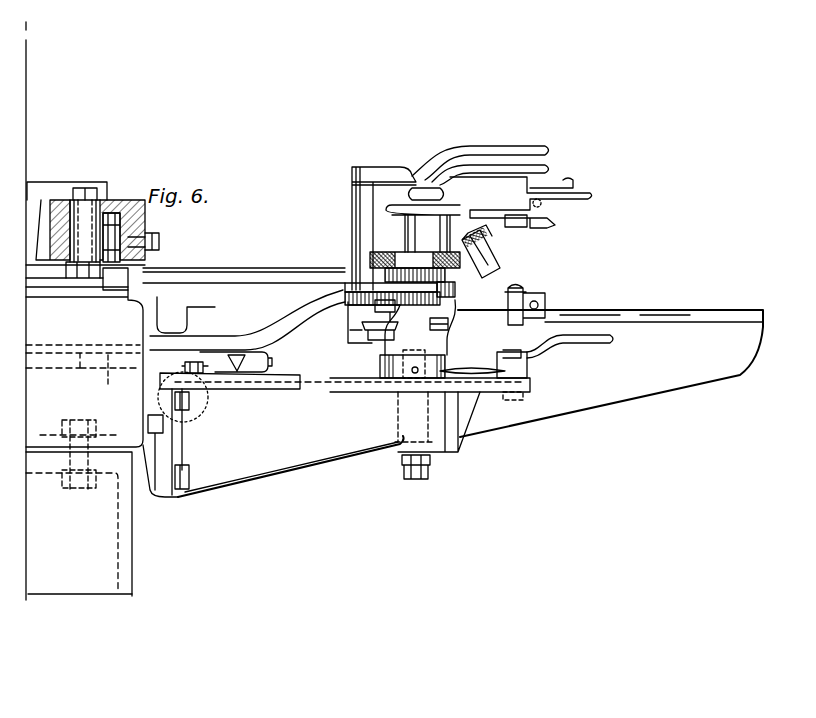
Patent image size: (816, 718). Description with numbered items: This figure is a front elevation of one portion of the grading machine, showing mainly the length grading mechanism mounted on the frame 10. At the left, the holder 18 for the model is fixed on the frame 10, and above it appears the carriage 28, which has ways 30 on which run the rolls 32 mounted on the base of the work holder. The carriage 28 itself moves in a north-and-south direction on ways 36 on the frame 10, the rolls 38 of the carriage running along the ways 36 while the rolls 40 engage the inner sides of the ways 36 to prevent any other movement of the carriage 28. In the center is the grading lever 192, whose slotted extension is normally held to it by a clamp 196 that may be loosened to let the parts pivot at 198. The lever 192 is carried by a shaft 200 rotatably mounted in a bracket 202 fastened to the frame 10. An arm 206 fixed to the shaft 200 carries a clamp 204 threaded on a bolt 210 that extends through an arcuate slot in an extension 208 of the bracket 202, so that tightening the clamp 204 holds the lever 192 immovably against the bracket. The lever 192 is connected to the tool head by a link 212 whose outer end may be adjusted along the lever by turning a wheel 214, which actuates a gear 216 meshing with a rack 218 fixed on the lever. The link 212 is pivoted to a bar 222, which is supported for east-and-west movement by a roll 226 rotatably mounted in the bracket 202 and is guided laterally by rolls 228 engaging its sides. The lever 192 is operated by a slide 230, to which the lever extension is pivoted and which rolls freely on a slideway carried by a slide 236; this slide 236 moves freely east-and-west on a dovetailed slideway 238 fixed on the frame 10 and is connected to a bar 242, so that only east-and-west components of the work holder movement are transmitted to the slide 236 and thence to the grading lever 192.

The frame 10 is at (33, 380).
The holder 18 is at (75, 288).
The carriage 28 is at (112, 210).
The ways 30 is at (68, 195).
The rolls 32 is at (158, 244).
The ways 36 is at (115, 291).
The rolls 38 is at (117, 236).
The rolls 40 is at (70, 273).
The grading lever 192 is at (345, 330).
The clamp 196 is at (550, 152).
The pivot 198 is at (392, 166).
The shaft 200 is at (430, 445).
The bracket 202 is at (223, 478).
The clamp 204 is at (610, 340).
The arm 206 is at (461, 369).
The extension 208 is at (533, 390).
The bolt 210 is at (511, 396).
The link 212 is at (302, 295).
The wheel 214 is at (378, 254).
The gear 216 is at (447, 299).
The rack 218 is at (348, 292).
The bar 222 is at (109, 385).
The roll 226 is at (208, 413).
The rolls 228 is at (200, 363).
The slide 230 is at (488, 254).
The slide 236 is at (499, 284).
The dovetailed slideway 238 is at (688, 314).
The bar 242 is at (218, 268).